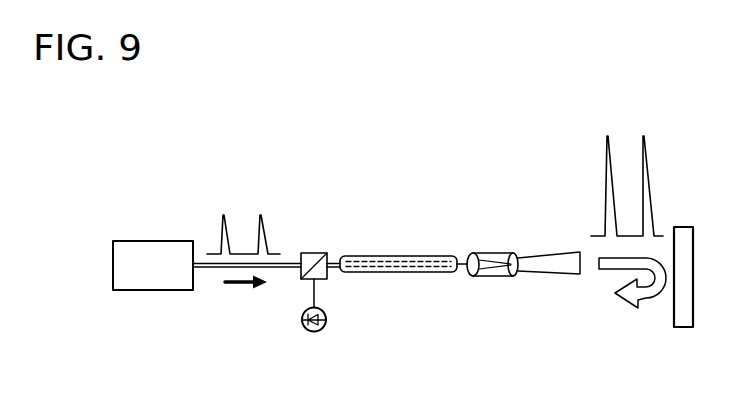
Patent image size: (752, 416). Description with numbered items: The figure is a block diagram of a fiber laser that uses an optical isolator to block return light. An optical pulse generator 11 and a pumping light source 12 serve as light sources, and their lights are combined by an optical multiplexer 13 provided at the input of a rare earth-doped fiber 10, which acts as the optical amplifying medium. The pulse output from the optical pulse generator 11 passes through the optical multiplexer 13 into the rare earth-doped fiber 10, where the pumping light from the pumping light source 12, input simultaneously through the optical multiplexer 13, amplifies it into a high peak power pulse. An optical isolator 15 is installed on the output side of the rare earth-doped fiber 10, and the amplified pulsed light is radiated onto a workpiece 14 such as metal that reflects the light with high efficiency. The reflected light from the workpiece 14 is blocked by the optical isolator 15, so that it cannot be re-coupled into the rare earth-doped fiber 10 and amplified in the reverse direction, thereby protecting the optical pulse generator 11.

The rare earth-doped fiber 10 is at (393, 256).
The optical pulse generator 11 is at (155, 241).
The pumping light source 12 is at (326, 329).
The optical multiplexer 13 is at (311, 253).
The workpiece 14 is at (681, 328).
The optical isolator 15 is at (492, 253).